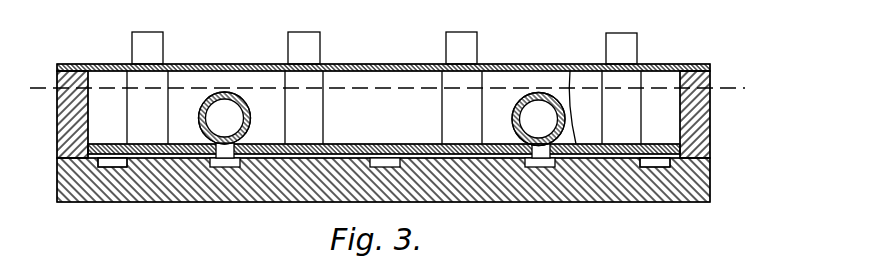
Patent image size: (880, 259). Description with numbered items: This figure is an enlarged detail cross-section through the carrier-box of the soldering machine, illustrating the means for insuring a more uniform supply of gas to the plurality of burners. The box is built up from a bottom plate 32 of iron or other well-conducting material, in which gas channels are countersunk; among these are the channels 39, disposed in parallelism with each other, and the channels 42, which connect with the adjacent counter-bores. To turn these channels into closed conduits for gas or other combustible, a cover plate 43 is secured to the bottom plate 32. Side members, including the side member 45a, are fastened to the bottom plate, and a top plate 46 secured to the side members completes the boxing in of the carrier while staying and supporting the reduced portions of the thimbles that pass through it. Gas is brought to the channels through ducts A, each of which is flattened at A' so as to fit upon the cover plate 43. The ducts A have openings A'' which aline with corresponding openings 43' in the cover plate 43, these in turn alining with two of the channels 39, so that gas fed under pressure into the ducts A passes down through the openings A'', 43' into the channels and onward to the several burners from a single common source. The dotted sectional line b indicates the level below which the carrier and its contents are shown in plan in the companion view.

The bottom plate 32 is at (608, 188).
The channels 39 is at (232, 163).
The channels 42 is at (115, 164).
The cover plate 43 is at (555, 90).
The openings 43' is at (347, 199).
The side member 45a is at (57, 142).
The top plate 46 is at (262, 64).
The sectional line b is at (386, 83).
The ducts A is at (382, 109).
The flattened portion A' is at (374, 119).
The openings A'' is at (380, 131).